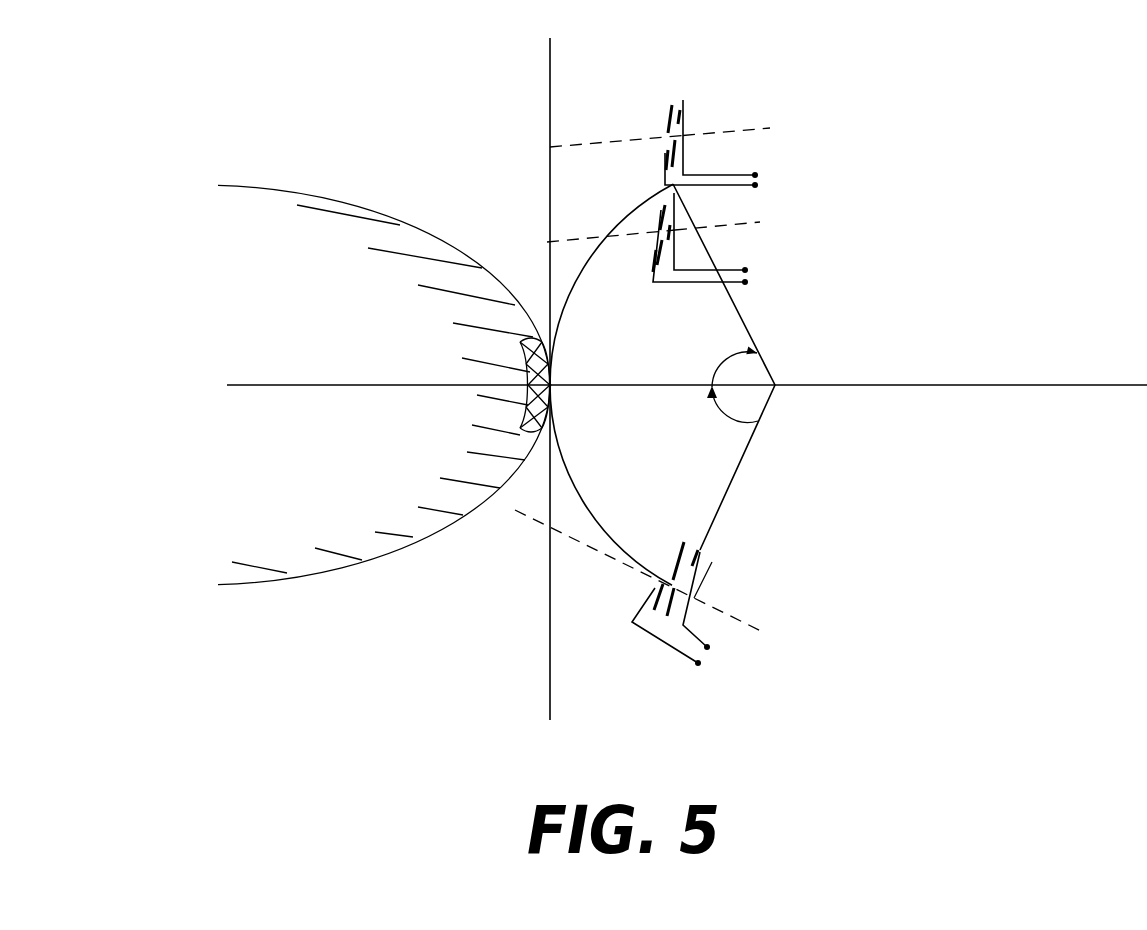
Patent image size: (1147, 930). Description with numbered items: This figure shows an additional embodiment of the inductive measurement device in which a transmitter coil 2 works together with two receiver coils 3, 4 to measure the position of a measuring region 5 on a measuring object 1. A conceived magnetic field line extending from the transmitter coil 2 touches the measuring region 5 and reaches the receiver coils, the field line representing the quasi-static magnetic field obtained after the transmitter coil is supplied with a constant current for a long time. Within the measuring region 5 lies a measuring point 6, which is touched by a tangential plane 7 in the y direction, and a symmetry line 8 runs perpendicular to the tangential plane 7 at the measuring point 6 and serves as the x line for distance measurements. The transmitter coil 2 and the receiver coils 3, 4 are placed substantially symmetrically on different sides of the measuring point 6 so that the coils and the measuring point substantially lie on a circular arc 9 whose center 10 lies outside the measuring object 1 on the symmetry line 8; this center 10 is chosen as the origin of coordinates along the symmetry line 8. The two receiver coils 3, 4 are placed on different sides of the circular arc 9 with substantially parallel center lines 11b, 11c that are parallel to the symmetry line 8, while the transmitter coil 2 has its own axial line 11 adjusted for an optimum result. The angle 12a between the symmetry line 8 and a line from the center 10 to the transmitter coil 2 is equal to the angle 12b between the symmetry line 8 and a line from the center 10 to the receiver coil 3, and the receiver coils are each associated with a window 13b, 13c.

The measuring object 1 is at (403, 232).
The transmitter coil 2 is at (697, 562).
The receiver coil 3 is at (675, 248).
The receiver coil 4 is at (672, 168).
The measuring region 5 is at (530, 372).
The measuring point 6 is at (551, 386).
The tangential plane 7 is at (550, 98).
The symmetry line 8 is at (962, 386).
The circular arc 9 is at (622, 550).
The center 10 is at (778, 388).
The detector axis (lower) 11 is at (602, 552).
The center line 11b is at (582, 227).
The center line 11c is at (620, 127).
The angle 12a is at (713, 408).
The angle 12b is at (712, 372).
The detector window (middle) 13b is at (673, 215).
The detector window (upper) 13c is at (680, 140).